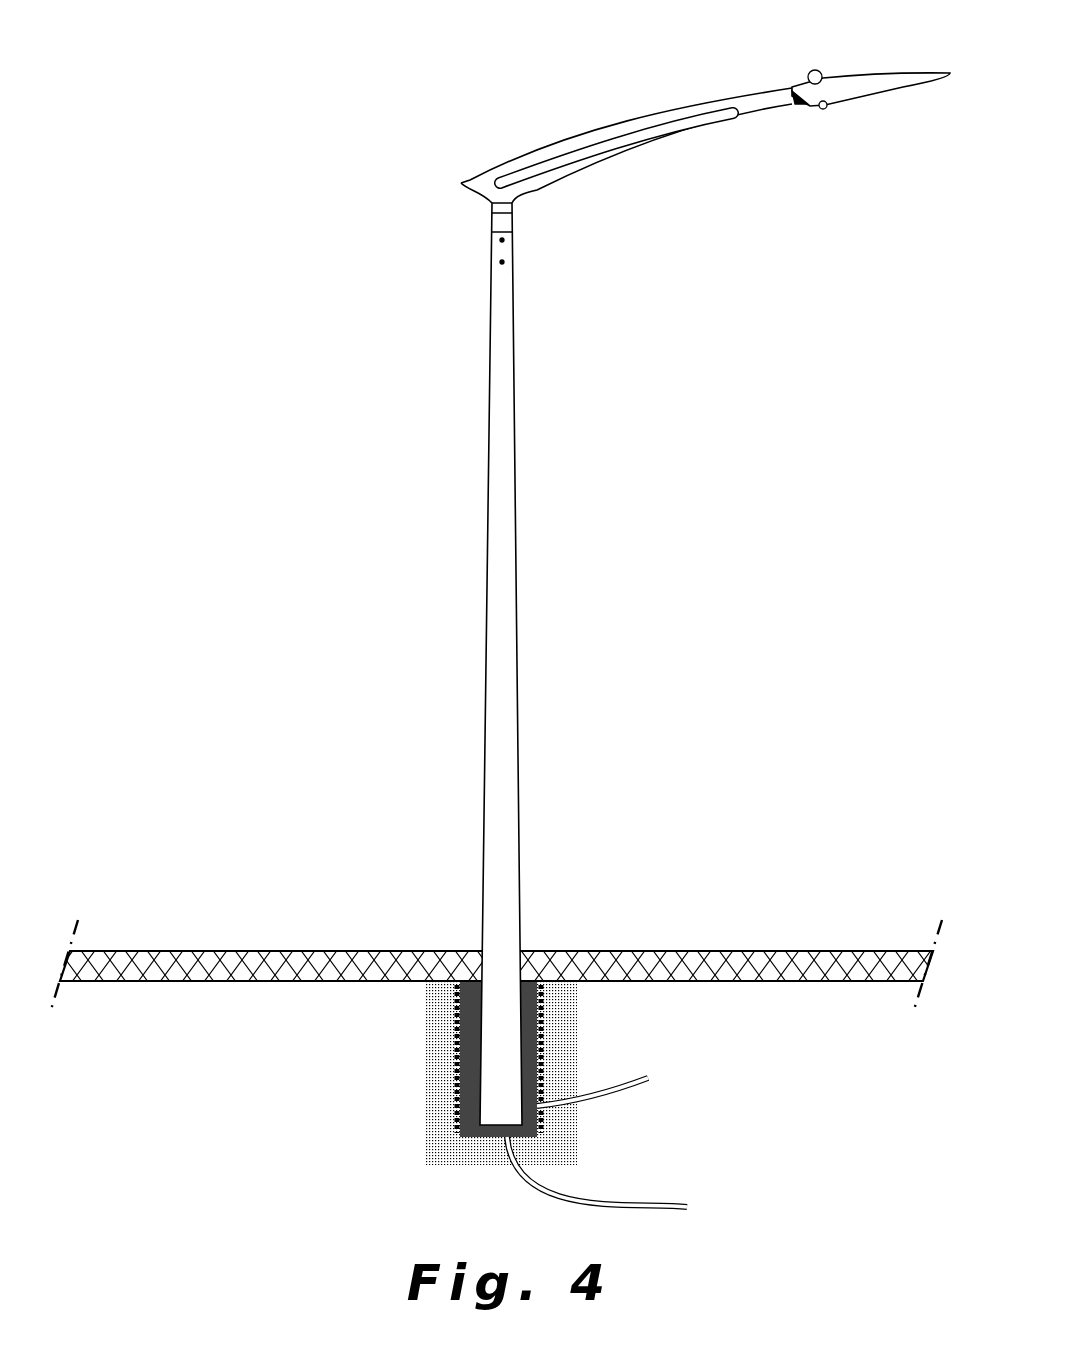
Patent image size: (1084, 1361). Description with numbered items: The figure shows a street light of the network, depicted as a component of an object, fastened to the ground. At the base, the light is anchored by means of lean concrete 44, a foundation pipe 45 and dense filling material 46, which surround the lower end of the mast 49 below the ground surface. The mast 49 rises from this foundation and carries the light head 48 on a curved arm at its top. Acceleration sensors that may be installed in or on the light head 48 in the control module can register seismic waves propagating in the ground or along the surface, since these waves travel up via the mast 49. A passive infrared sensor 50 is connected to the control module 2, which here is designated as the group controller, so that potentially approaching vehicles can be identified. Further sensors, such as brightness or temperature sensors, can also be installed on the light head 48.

The control module 2 is at (810, 72).
The lean concrete 44 is at (565, 1037).
The foundation pipe 45 is at (455, 1052).
The dense filling material 46 is at (457, 1128).
The light head 48 is at (852, 110).
The mast 49 is at (502, 482).
The passive infrared sensor 50 is at (819, 109).